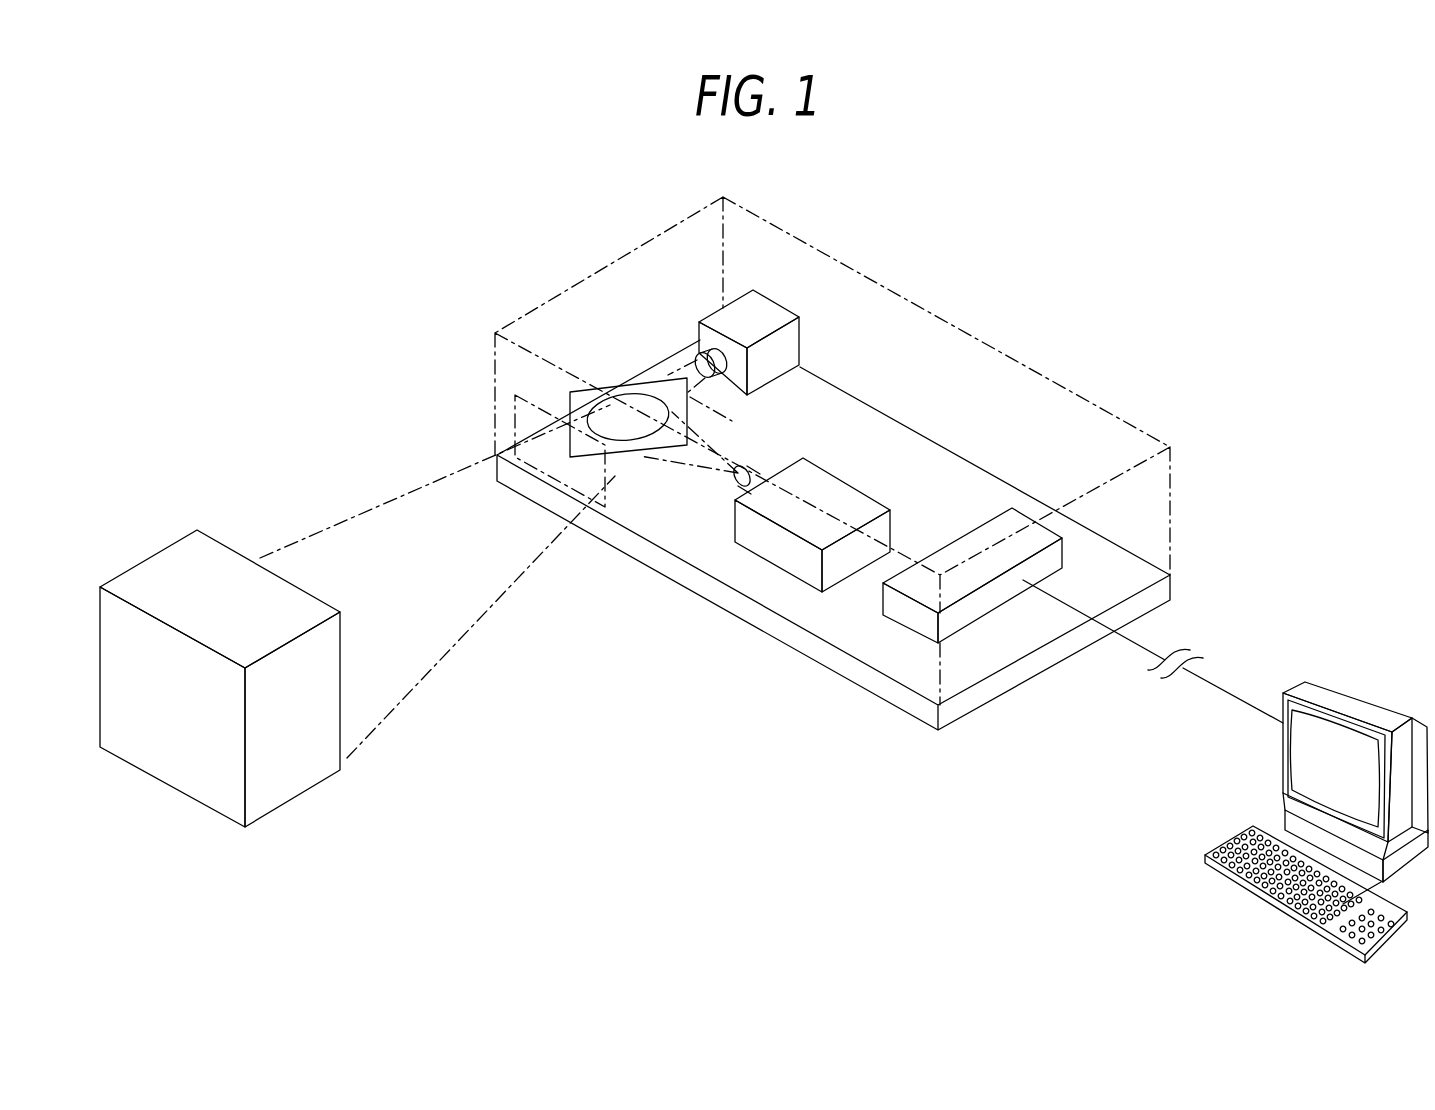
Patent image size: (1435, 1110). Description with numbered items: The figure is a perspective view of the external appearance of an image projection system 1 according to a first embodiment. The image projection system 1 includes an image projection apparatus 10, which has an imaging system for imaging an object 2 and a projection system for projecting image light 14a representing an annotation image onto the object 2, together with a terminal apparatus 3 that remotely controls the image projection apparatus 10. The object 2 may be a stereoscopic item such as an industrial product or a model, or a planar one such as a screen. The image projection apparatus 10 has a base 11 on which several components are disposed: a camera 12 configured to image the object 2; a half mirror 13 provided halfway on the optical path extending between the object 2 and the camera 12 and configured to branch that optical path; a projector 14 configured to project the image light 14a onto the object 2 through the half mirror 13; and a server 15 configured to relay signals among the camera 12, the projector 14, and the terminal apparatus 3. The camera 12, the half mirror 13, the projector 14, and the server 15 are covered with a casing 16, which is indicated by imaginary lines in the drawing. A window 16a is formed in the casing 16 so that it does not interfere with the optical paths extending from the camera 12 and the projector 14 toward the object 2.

The image projection system 1 is at (1132, 262).
The image projection apparatus 10 is at (1152, 405).
The base 11 is at (987, 690).
The camera 12 is at (752, 318).
The half mirror 13 is at (582, 416).
The projector 14 is at (800, 565).
The image light 14a is at (740, 483).
The server 15 is at (922, 622).
The casing 16 is at (1172, 483).
The window 16a is at (520, 430).
The object 2 is at (278, 770).
The terminal apparatus 3 is at (1310, 693).